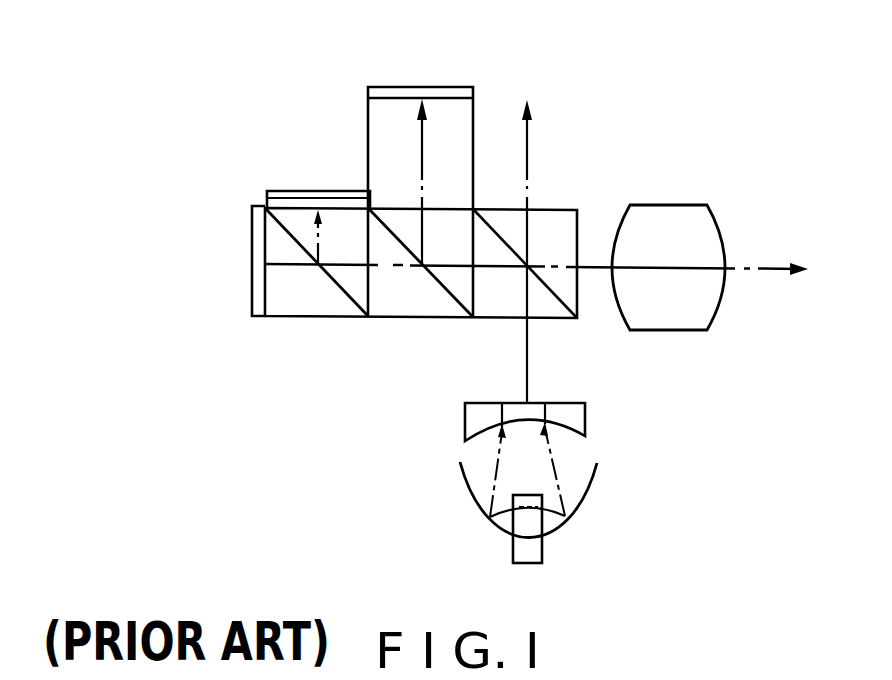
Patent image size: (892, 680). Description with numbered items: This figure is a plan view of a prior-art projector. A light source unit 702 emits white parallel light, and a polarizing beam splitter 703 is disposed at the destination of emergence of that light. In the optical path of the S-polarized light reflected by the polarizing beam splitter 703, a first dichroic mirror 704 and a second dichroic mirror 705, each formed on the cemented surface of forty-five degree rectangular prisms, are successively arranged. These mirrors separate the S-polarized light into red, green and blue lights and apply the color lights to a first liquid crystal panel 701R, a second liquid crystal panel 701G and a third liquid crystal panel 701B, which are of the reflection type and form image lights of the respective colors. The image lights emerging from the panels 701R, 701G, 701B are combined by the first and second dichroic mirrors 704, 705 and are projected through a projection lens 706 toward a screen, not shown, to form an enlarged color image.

The third liquid crystal panel 701B is at (403, 93).
The first liquid crystal panel 701R is at (303, 198).
The second liquid crystal panel 701G is at (255, 233).
The light source unit 702 is at (707, 515).
The polarizing beam splitter 703 is at (555, 208).
The first dichroic mirror 704 is at (443, 292).
The second dichroic mirror 705 is at (342, 290).
The projection lens 706 is at (670, 202).